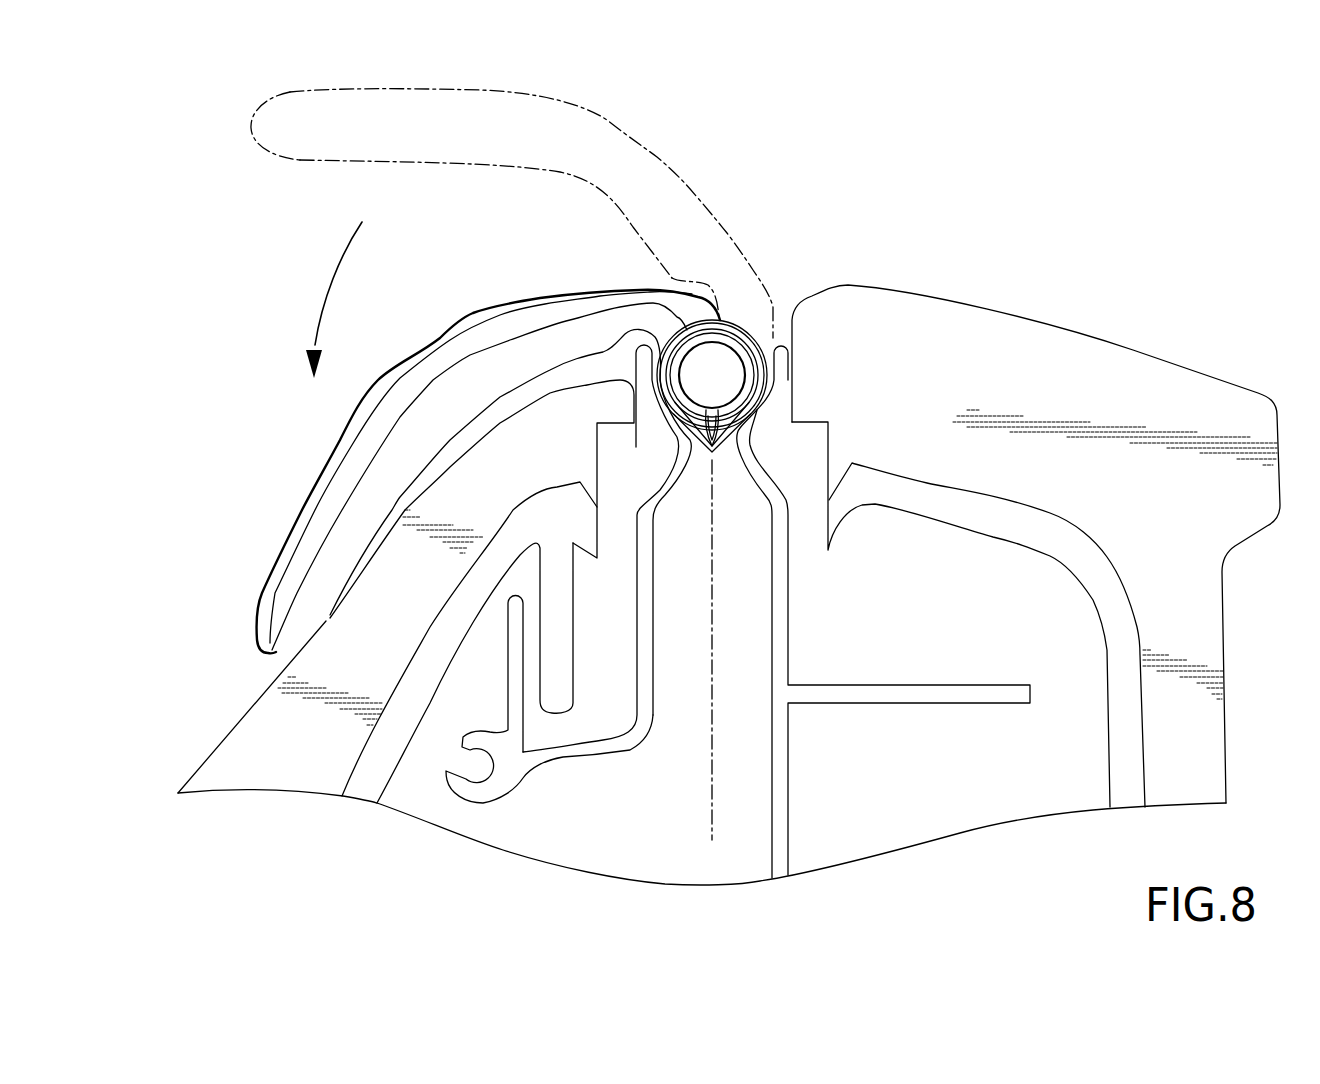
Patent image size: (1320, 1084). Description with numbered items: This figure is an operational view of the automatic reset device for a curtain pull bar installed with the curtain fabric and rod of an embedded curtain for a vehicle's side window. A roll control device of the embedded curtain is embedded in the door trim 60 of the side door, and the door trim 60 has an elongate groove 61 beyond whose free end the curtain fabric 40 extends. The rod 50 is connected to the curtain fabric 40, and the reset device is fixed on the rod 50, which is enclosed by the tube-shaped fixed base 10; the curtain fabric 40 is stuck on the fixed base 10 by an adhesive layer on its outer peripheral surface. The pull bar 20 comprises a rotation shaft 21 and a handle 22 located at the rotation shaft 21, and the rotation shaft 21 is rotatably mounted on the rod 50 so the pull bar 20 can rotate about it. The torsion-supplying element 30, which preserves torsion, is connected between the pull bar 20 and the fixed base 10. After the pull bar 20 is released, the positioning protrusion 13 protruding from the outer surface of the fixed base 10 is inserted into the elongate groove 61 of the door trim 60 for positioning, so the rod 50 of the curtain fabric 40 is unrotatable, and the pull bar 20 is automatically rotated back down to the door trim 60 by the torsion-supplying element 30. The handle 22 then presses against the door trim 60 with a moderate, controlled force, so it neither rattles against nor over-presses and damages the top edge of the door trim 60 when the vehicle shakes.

The fixed base 10 is at (745, 318).
The positioning protrusion 13 is at (720, 424).
The pull bar 20 is at (672, 274).
The rotation shaft 21 is at (763, 384).
The handle 22 is at (497, 333).
The torsion-supplying element 30 is at (768, 403).
The curtain fabric 40 is at (703, 797).
The rod 50 is at (697, 368).
The door trim 60 is at (195, 715).
The elongate groove 61 is at (777, 326).